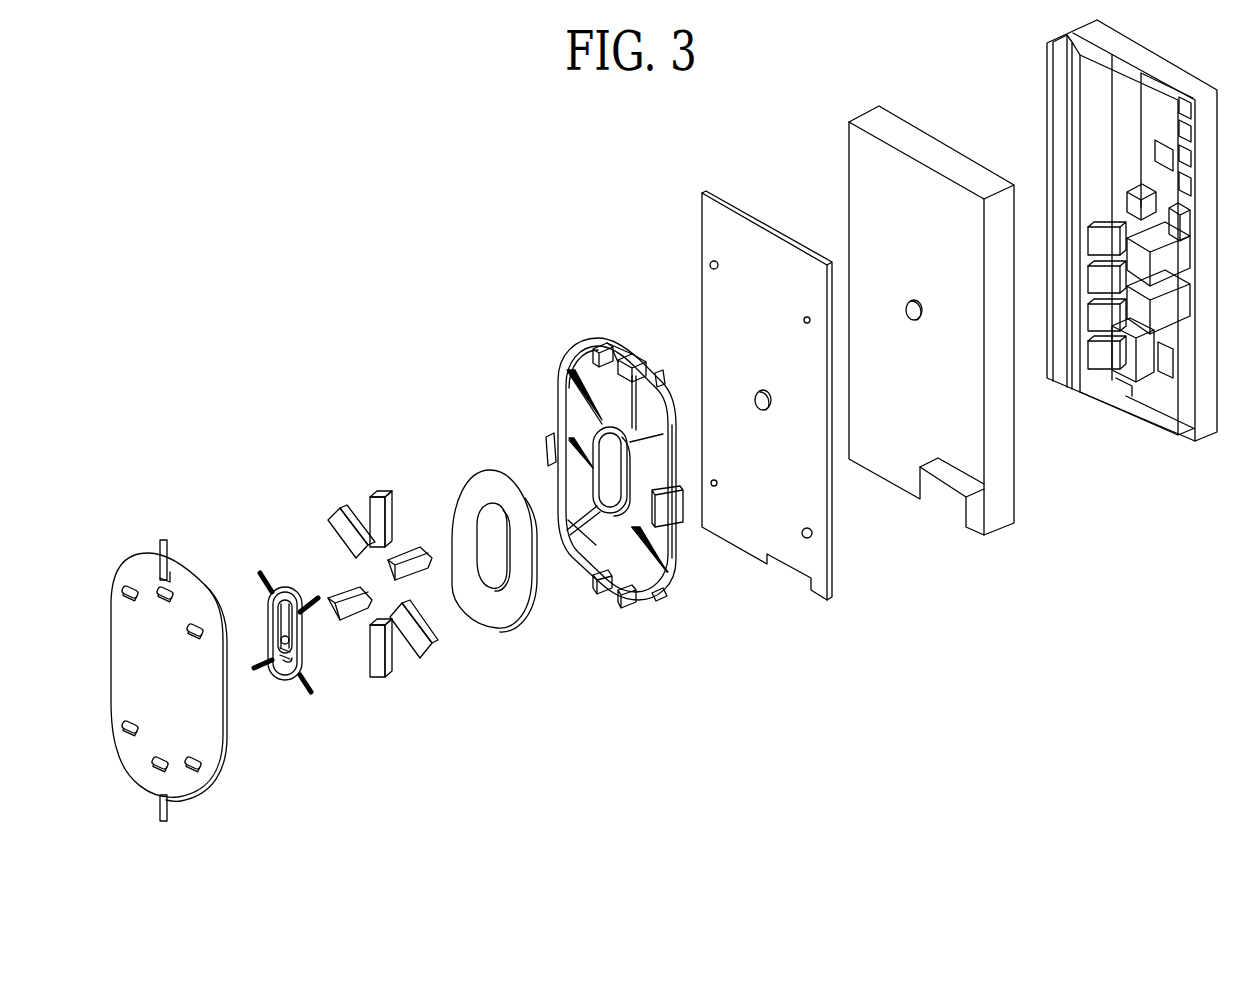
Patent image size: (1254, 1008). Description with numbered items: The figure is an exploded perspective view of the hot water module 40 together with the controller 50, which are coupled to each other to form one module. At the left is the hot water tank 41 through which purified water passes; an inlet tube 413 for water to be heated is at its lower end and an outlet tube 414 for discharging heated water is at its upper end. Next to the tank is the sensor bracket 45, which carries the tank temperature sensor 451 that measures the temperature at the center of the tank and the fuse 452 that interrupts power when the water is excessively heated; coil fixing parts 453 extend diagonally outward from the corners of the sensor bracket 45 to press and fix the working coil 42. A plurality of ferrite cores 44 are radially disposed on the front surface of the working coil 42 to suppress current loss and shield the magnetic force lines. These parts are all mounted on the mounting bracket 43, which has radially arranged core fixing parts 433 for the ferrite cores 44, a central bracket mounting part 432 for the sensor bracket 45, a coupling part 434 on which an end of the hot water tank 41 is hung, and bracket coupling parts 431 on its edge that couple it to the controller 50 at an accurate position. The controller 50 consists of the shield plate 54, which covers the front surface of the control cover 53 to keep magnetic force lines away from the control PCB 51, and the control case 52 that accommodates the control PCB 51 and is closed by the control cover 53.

The hot water module 40 is at (641, 276).
The hot water tank 41 is at (199, 800).
The inlet tube 413 is at (163, 822).
The outlet tube 414 is at (170, 553).
The working coil 42 is at (518, 630).
The mounting bracket 43 is at (617, 495).
The bracket coupling part 431 is at (668, 596).
The bracket mounting part 432 is at (618, 560).
The core fixing part 433 is at (573, 408).
The coupling part 434 is at (660, 372).
The ferrite core 44 is at (422, 680).
The sensor bracket 45 is at (293, 689).
The tank temperature sensor 451 is at (280, 633).
The fuse 452 is at (277, 678).
The coil fixing parts 453 is at (314, 612).
The controller 50 is at (1222, 504).
The control PCB 51 is at (1150, 364).
The control case 52 is at (1202, 402).
The control cover 53 is at (1020, 490).
The shield plate 54 is at (838, 561).